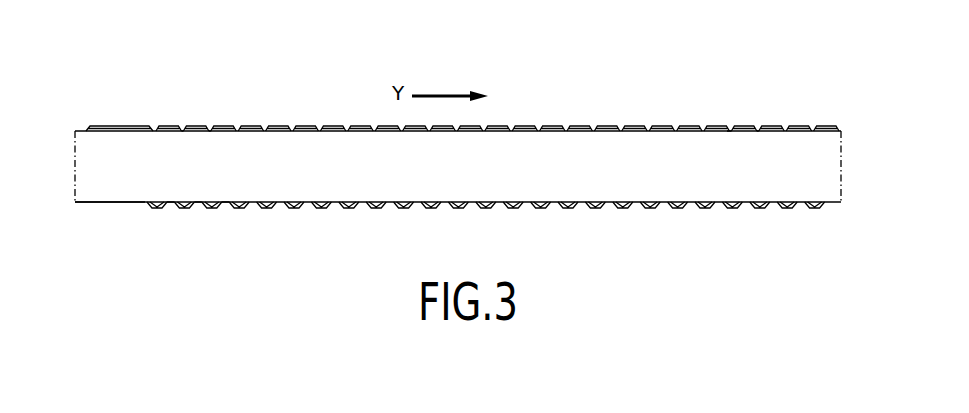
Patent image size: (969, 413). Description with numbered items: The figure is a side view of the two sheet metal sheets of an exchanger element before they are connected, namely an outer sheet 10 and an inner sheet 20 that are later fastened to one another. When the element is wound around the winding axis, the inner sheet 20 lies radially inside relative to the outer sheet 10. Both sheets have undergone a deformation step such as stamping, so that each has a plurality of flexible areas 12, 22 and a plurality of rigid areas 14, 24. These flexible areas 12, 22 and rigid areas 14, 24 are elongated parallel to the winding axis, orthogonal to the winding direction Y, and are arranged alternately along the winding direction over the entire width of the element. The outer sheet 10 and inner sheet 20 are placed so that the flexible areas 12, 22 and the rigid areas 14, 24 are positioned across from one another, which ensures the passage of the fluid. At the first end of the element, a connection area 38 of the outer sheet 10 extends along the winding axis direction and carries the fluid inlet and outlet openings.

The outer sheet 10 is at (78, 128).
The flexible areas 12 is at (185, 114).
The rigid areas 14 is at (170, 114).
The inner sheet 20 is at (78, 205).
The flexible areas 22 is at (185, 220).
The rigid areas 24 is at (200, 218).
The connection area 38 is at (117, 114).